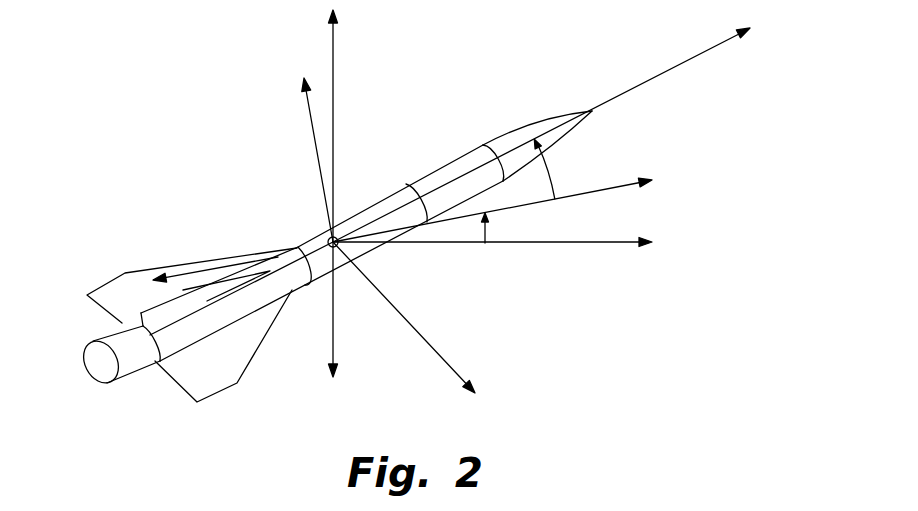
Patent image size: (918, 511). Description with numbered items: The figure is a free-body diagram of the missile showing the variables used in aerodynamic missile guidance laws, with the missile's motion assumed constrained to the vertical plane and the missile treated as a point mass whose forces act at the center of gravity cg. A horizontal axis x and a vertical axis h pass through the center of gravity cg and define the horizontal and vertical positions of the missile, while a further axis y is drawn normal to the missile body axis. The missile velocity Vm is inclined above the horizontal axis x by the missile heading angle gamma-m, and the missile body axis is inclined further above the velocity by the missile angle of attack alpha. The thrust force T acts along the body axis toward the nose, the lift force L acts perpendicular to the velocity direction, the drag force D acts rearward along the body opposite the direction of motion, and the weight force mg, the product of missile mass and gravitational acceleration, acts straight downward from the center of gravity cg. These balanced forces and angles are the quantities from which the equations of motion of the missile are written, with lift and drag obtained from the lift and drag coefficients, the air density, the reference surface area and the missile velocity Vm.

The element missile is at (334, 256).
The center of gravity cg is at (307, 225).
The vertical position axis h is at (314, 121).
The lift force L is at (310, 145).
The thrust force T is at (552, 124).
The missile velocity Vm is at (512, 202).
The horizontal position axis x is at (502, 242).
The body-normal axis y is at (412, 329).
The weight force mg is at (354, 309).
The drag force D is at (197, 279).
The missile heading angle gamma-m is at (501, 227).
The missile angle of attack alpha is at (552, 169).